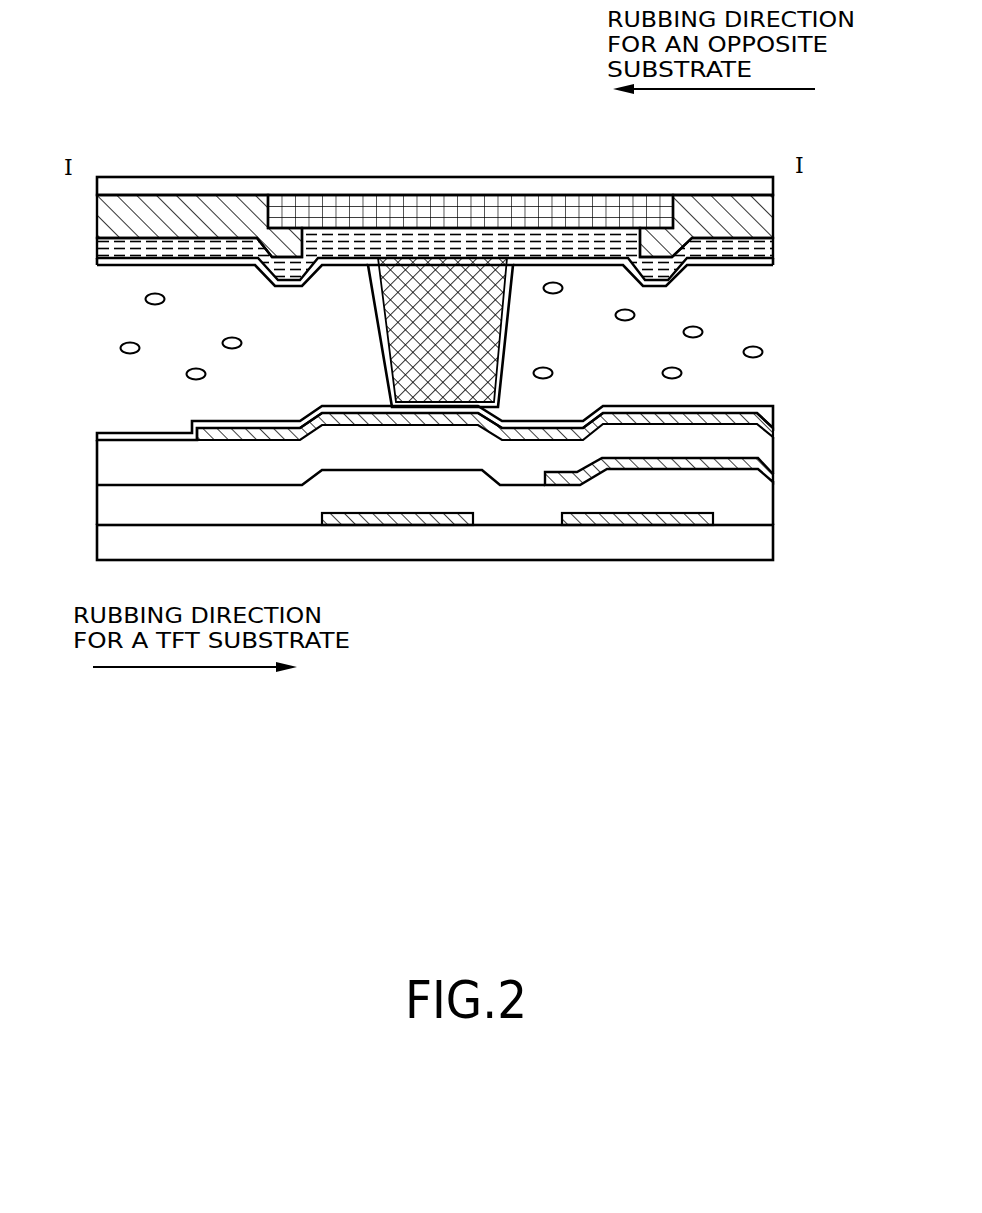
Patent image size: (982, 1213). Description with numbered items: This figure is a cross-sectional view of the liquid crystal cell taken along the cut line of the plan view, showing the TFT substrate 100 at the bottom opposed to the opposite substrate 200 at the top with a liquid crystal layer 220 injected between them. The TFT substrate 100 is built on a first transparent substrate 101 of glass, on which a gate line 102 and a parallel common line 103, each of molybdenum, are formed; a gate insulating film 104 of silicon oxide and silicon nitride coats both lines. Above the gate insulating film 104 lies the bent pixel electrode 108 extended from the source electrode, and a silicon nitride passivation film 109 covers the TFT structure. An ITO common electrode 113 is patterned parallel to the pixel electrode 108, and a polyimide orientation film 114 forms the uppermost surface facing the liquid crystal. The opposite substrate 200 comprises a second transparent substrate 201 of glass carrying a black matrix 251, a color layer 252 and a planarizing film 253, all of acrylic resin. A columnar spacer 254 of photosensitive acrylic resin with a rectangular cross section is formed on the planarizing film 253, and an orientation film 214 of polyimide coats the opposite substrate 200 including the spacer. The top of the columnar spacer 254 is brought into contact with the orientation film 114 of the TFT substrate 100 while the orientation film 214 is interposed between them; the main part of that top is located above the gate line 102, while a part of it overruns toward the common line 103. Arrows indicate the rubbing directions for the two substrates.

The TFT substrate 100 is at (546, 638).
The first transparent substrate 101 is at (774, 538).
The gate line 102 is at (425, 527).
The common line 103 is at (642, 527).
The gate insulating film 104 is at (774, 500).
The pixel electrode 108 is at (774, 471).
The passivation film 109 is at (774, 446).
The common electrode 113 is at (774, 418).
The orientation film 114 is at (727, 406).
The opposite substrate 200 is at (538, 132).
The second transparent substrate 201 is at (774, 185).
The orientation film 214 is at (741, 268).
The liquid crystal layer 220 is at (777, 268).
The black matrix 251 is at (430, 212).
The color layer 252 is at (192, 200).
The planarizing film 253 is at (774, 243).
The columnar spacer 254 is at (503, 338).